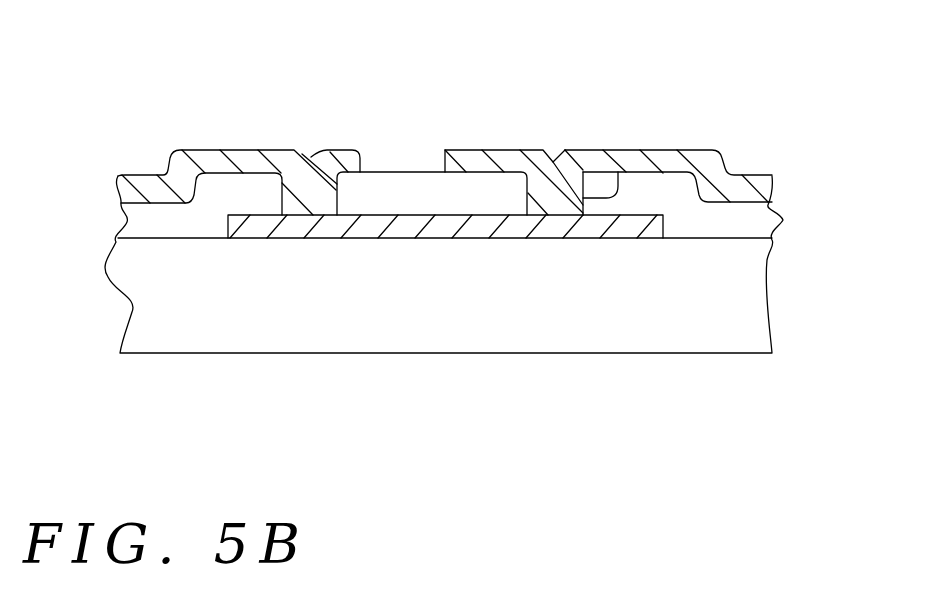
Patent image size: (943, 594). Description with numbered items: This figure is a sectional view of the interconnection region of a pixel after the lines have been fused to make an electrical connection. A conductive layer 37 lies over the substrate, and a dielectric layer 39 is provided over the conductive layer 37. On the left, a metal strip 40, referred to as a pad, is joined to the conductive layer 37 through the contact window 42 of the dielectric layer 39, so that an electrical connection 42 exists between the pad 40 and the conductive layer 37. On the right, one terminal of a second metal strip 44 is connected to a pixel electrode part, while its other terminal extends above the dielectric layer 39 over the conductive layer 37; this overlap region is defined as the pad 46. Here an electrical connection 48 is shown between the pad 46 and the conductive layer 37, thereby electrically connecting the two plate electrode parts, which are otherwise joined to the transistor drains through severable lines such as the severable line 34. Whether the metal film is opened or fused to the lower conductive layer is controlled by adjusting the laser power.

The severable line 34 is at (747, 220).
The conductive layer 37 is at (633, 227).
The dielectric layer 39 is at (426, 193).
The metal strip 40 is at (157, 181).
The contact window 42 is at (314, 159).
The second metal strip 44 is at (750, 173).
The pad 46 is at (500, 149).
The electrical connection 48 is at (618, 173).